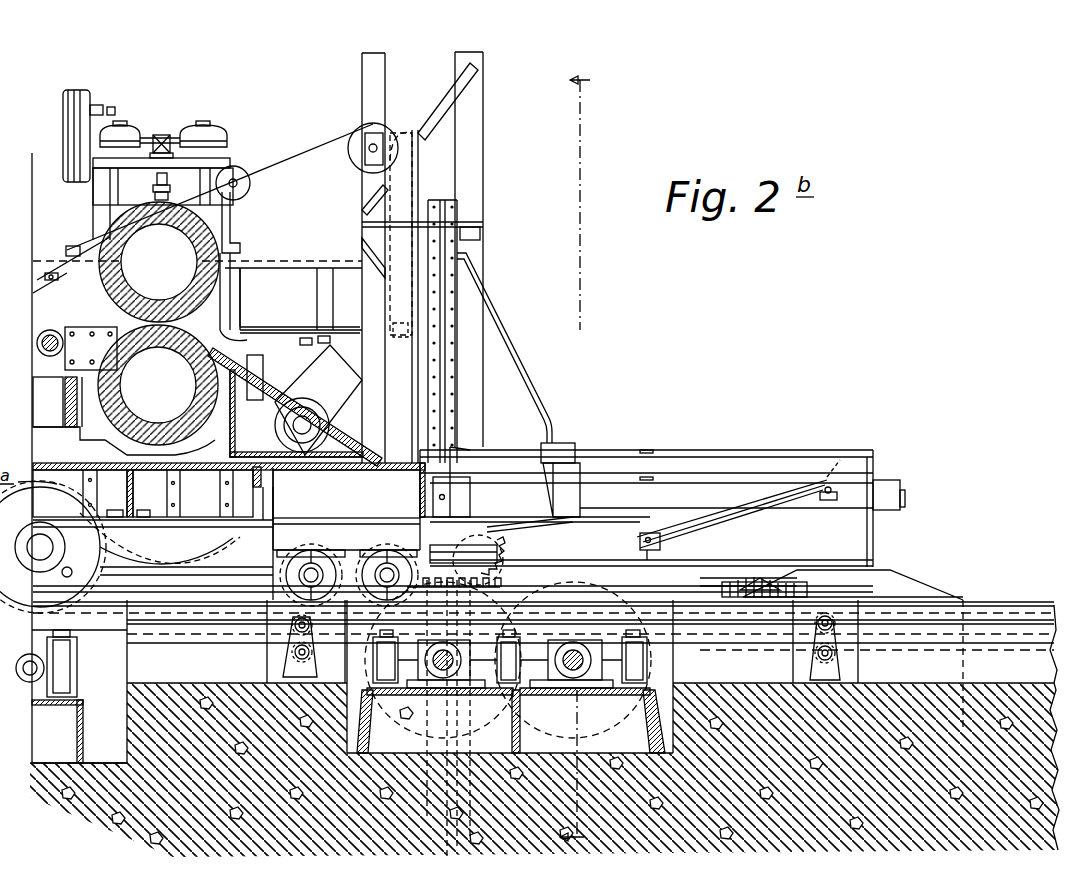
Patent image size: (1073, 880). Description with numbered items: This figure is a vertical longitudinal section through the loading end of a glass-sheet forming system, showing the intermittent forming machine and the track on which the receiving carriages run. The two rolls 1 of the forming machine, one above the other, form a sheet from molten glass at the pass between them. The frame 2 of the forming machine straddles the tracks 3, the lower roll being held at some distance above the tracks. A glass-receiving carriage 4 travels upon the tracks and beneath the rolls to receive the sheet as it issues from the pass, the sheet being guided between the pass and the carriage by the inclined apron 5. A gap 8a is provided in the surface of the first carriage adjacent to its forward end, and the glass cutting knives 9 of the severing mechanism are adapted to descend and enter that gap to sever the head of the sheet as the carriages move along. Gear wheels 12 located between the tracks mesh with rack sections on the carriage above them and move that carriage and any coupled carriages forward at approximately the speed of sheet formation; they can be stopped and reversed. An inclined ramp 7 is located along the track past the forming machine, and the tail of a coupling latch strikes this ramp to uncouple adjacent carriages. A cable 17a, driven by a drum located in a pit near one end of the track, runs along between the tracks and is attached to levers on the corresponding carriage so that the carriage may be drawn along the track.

The rolls 1 is at (150, 322).
The frame 2 is at (227, 337).
The tracks 3 is at (603, 612).
The glass-receiving carriages 4 is at (575, 459).
The inclined apron 5 is at (240, 395).
The inclined ramp 7 is at (905, 567).
The gap 8a is at (277, 478).
The glass cutting knives 9 is at (458, 221).
The gear wheels 12 is at (488, 590).
The cable 17a is at (725, 663).